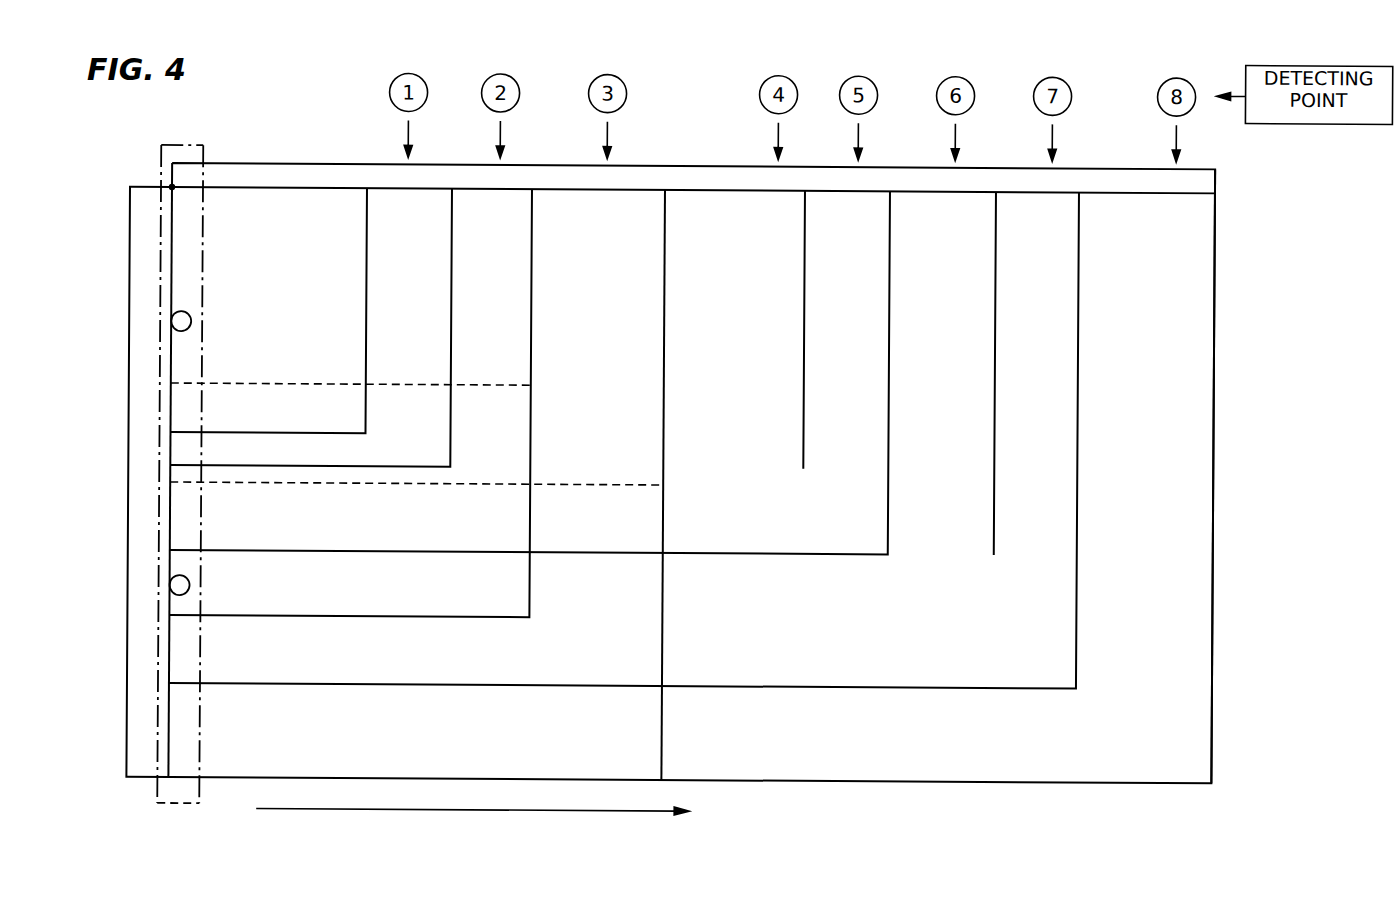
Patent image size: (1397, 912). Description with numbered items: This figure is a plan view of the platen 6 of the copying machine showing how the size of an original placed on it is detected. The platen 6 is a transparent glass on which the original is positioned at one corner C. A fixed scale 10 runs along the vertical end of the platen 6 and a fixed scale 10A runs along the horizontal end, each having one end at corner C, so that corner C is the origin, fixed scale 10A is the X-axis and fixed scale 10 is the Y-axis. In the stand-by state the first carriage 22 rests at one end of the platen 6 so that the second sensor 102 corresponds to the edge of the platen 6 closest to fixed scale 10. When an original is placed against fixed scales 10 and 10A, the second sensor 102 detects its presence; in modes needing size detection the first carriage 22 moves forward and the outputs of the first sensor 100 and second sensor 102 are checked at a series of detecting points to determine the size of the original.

The fixed scale 10 is at (138, 486).
The fixed scale 10A is at (1210, 177).
The platen 6 is at (1216, 457).
The first carriage 22 is at (166, 146).
The corner C is at (175, 188).
The second sensor 102 is at (174, 323).
The first sensor 100 is at (174, 587).